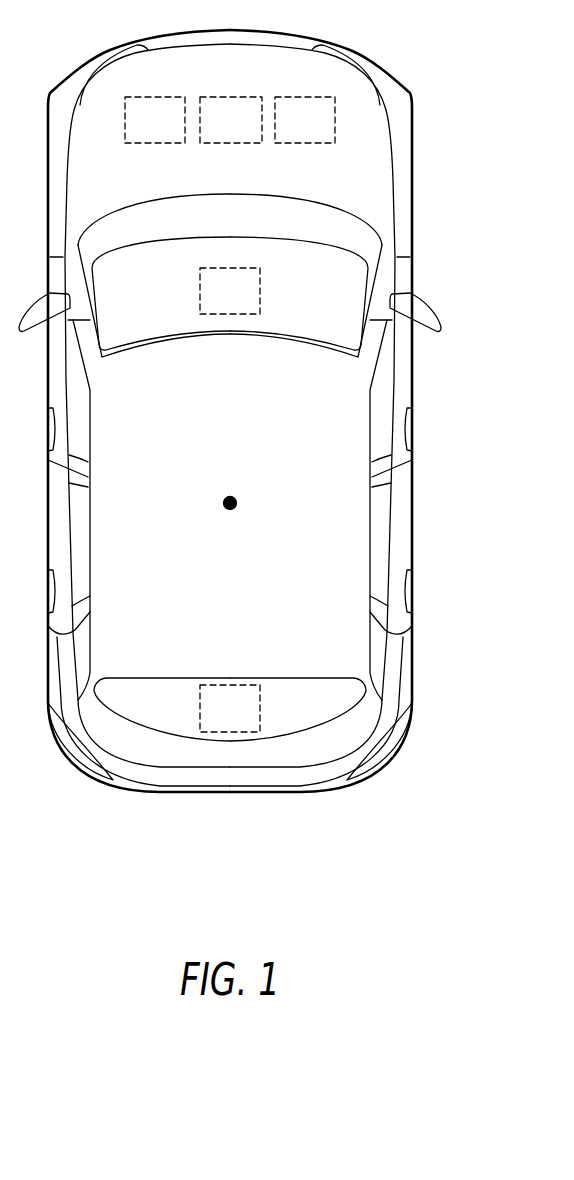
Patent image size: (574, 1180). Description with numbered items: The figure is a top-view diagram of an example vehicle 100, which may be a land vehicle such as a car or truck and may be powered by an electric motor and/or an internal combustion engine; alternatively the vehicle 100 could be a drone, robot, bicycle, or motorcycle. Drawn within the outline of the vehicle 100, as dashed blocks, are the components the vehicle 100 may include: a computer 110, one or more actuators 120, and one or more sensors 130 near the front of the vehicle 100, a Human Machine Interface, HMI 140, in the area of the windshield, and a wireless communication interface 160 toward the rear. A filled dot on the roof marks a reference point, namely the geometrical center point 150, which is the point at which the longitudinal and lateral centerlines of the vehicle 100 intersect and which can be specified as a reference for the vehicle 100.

The vehicle 100 is at (230, 411).
The computer 110 is at (155, 120).
The actuator 120 is at (231, 120).
The sensor 130 is at (305, 120).
The Human Machine Interface 140 is at (230, 291).
The geometrical center point 150 is at (238, 503).
The wireless communication interface 160 is at (230, 708).